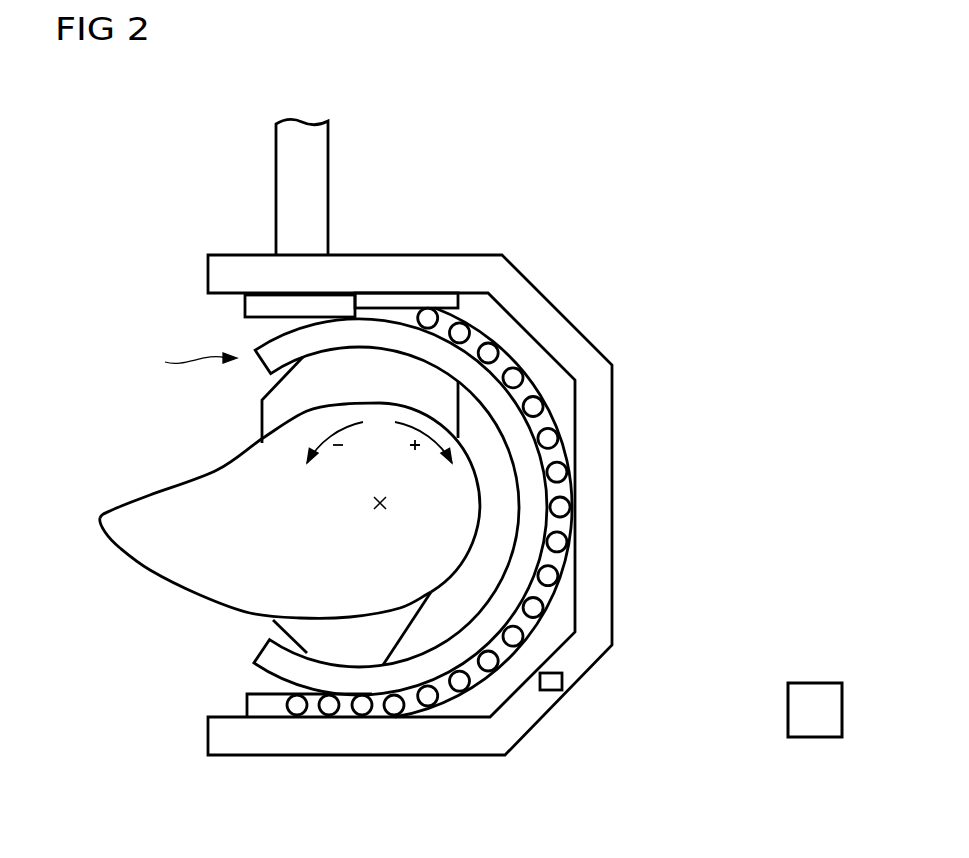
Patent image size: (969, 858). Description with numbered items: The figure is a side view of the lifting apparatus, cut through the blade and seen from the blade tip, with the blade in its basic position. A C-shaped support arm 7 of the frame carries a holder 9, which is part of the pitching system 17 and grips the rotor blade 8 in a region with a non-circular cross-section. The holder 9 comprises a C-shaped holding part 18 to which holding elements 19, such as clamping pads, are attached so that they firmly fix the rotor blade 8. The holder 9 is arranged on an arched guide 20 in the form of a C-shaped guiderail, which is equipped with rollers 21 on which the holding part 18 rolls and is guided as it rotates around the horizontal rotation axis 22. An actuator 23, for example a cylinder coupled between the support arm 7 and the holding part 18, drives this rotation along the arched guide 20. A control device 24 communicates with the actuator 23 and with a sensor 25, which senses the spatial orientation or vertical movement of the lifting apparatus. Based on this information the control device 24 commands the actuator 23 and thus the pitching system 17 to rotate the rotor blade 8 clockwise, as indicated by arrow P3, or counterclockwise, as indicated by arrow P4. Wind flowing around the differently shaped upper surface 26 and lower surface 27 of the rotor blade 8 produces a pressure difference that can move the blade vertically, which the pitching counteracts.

The support arm 7 is at (382, 265).
The rotor blade 8 is at (270, 522).
The holder 9 is at (192, 362).
The pitching system 17 is at (450, 520).
The holding part 18 is at (247, 302).
The holding element 19 is at (272, 413).
The arched guide 20 is at (515, 355).
The roller 21 is at (362, 708).
The rotation axis 22 is at (383, 510).
The actuator 23 is at (430, 300).
The control device 24 is at (815, 683).
The sensor 25 is at (562, 681).
The upper surface 26 is at (147, 495).
The lower surface 27 is at (145, 567).
The arrow P3 is at (432, 445).
The arrow P4 is at (323, 445).